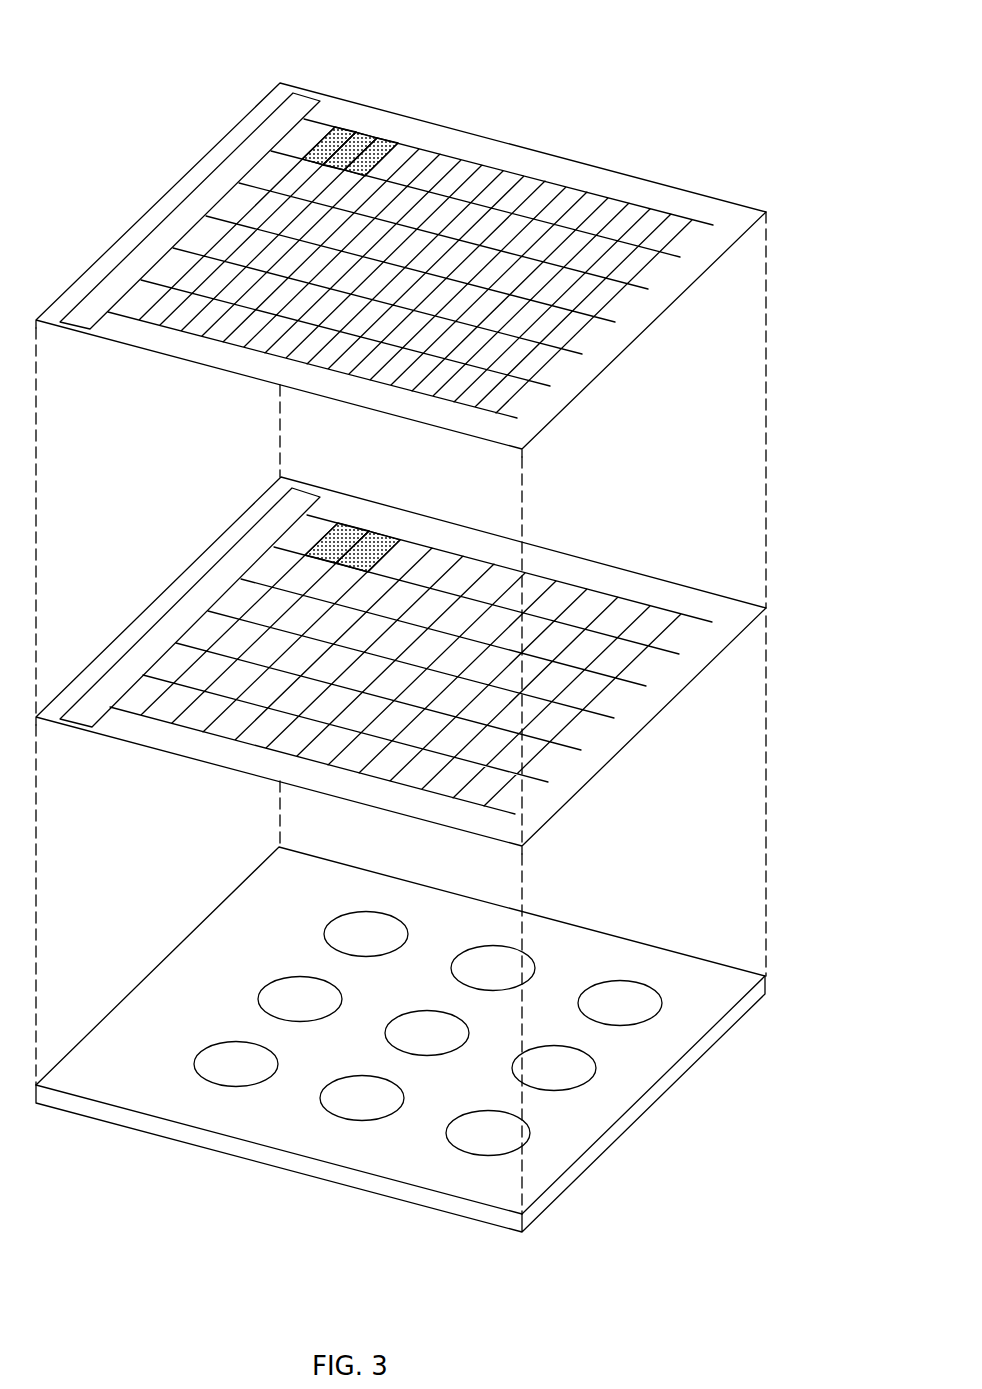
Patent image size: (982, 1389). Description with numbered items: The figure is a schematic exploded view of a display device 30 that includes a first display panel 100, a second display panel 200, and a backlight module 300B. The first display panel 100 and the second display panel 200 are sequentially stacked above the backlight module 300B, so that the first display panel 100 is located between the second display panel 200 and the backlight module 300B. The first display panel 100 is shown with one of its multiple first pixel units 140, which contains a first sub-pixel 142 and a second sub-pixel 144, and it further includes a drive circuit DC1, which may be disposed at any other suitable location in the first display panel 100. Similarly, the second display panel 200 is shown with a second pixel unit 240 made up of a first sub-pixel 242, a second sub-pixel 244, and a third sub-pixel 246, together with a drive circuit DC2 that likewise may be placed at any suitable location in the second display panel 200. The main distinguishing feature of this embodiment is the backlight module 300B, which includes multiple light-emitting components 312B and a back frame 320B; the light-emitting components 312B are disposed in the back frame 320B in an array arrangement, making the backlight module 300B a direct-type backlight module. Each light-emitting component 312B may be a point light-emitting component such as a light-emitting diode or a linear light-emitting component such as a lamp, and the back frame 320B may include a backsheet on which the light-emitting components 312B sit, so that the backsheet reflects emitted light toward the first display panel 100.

The display device 30 is at (712, 1229).
The first display panel 100 is at (401, 648).
The first pixel unit 140 is at (269, 507).
The first sub-pixel 142 is at (332, 542).
The second sub-pixel 144 is at (362, 563).
The drive circuit DC1 is at (176, 612).
The second display panel 200 is at (401, 230).
The second pixel unit 240 is at (407, 89).
The first sub-pixel 242 is at (344, 134).
The second sub-pixel 244 is at (365, 140).
The third sub-pixel 246 is at (428, 119).
The drive circuit DC2 is at (176, 220).
The backlight module 300B is at (446, 1039).
The light-emitting component 312B is at (645, 997).
The back frame 320B is at (668, 1082).